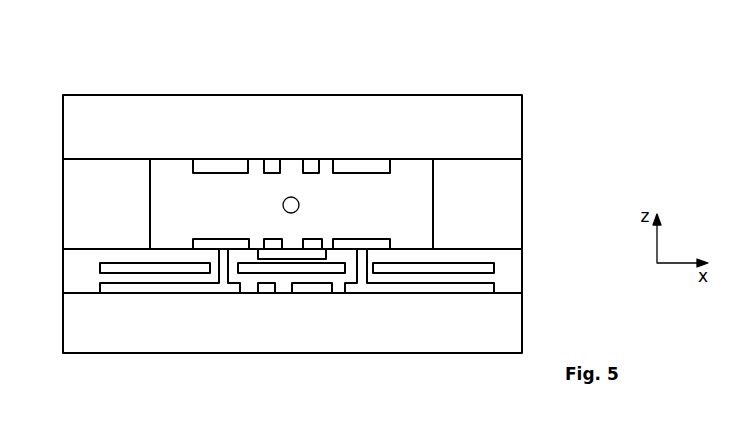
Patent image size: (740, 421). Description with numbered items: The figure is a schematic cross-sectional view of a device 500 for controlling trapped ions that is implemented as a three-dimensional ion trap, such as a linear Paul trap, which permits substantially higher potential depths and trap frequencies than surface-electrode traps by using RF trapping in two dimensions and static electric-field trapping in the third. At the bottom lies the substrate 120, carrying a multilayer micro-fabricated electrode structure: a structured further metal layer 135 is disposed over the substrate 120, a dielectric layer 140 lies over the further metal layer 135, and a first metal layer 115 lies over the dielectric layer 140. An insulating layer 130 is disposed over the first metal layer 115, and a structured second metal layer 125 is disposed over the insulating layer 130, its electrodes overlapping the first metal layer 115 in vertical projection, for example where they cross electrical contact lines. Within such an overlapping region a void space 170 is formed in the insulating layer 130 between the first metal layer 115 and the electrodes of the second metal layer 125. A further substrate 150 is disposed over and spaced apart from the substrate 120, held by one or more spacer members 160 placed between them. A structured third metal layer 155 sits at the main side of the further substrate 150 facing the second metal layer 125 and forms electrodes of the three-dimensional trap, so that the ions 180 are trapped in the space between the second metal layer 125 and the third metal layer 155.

The device for controlling trapped ions 500 is at (500, 74).
The further substrate 150 is at (73, 133).
The spacer member 160 is at (73, 178).
The structured third metal layer 155 is at (345, 167).
The structured second metal layer 125 is at (212, 243).
The ion 180 is at (282, 205).
The insulating layer 130 is at (113, 255).
The first metal layer 115 is at (150, 268).
The dielectric layer 140 is at (113, 282).
The structured further metal layer 135 is at (145, 292).
The void space 170 is at (305, 257).
The substrate 120 is at (72, 343).